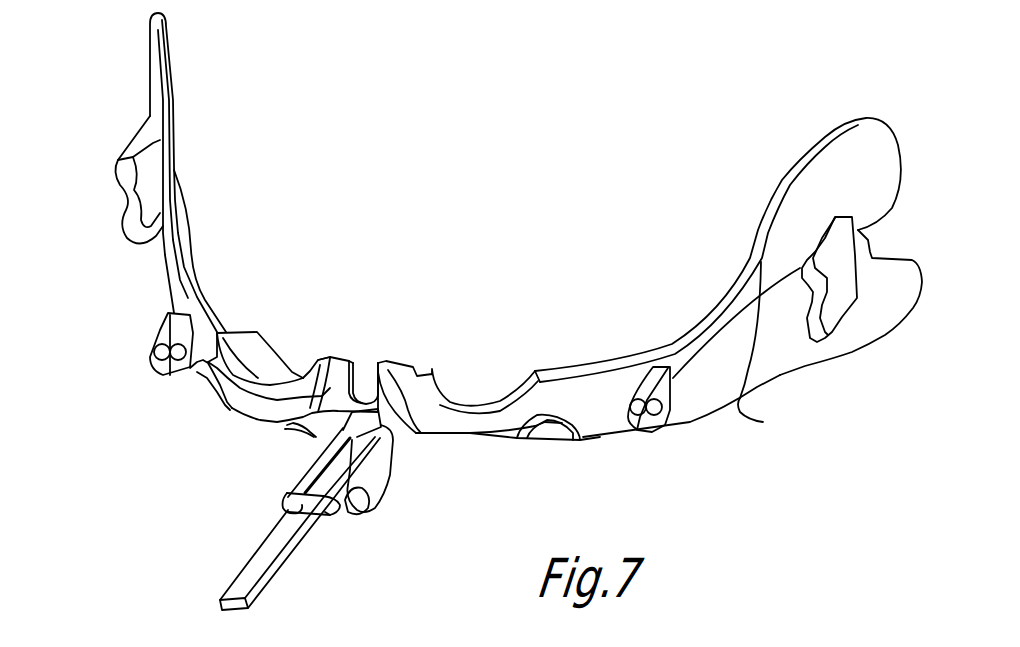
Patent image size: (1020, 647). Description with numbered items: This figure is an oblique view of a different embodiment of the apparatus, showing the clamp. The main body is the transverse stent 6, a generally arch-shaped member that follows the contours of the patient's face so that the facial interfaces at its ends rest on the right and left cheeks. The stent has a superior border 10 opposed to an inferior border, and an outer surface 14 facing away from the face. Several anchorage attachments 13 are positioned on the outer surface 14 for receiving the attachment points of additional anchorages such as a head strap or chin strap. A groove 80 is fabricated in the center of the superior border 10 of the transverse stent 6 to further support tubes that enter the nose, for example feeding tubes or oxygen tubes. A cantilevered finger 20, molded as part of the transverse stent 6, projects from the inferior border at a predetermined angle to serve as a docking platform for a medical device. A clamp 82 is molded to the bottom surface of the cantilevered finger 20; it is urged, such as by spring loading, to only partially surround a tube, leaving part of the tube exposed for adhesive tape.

The transverse stent 6 is at (603, 413).
The superior border 10 is at (675, 341).
The anchorage attachment 13 is at (150, 173).
The outer surface 14 is at (773, 416).
The cantilevered finger 20 is at (280, 567).
The groove 80 is at (373, 380).
The clamp 82 is at (373, 490).